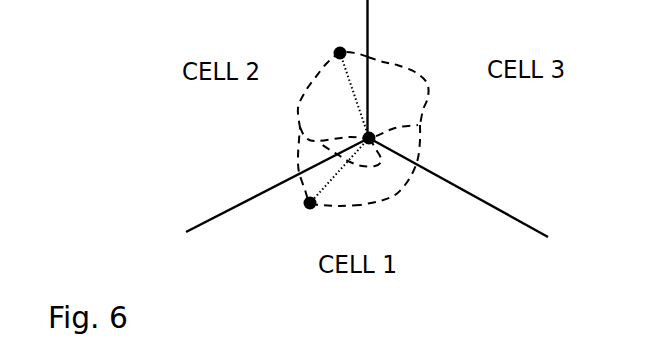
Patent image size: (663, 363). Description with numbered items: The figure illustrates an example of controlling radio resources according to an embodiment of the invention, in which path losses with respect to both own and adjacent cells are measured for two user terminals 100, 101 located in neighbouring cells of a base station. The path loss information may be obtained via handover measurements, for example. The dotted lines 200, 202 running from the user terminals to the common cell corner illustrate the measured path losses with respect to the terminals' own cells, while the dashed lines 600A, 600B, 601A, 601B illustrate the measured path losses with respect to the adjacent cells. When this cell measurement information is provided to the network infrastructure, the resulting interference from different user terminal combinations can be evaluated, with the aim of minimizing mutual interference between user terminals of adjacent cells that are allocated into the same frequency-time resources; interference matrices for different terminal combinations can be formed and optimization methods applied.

The user terminal 100 is at (305, 208).
The user terminal 101 is at (336, 52).
The path loss with respect to own cell 200 is at (341, 172).
The path loss with respect to own cell 202 is at (352, 85).
The path loss with respect to adjacent cell 600A is at (298, 151).
The path loss with respect to adjacent cell 600B is at (402, 188).
The path loss with respect to adjacent cell 601A is at (307, 91).
The path loss with respect to adjacent cell 601B is at (428, 81).